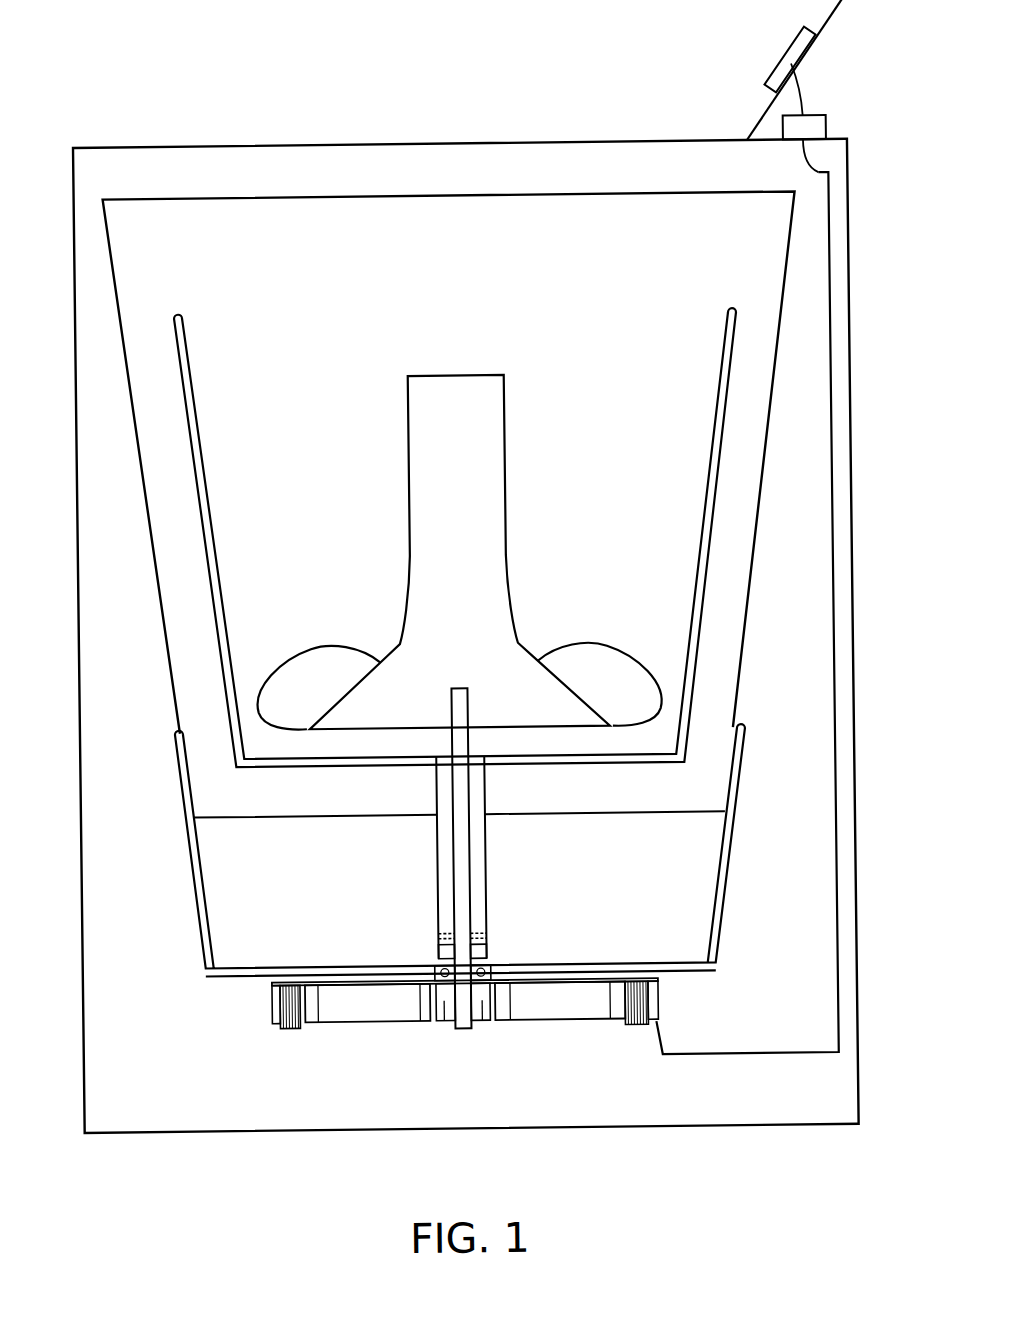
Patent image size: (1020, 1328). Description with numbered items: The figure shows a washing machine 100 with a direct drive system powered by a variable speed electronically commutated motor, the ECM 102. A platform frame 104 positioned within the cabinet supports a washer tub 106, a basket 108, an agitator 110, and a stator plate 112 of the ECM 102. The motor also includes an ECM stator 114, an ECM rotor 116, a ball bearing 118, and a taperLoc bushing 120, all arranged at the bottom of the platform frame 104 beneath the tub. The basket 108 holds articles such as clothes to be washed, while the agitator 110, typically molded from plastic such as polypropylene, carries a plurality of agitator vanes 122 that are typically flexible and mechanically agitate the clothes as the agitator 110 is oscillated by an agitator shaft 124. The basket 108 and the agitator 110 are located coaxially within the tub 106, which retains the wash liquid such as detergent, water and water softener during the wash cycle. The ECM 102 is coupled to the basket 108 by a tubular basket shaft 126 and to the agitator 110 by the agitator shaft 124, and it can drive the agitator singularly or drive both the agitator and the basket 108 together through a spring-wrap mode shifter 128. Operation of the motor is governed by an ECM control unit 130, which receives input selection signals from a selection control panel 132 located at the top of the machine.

The washing machine 100 is at (852, 532).
The electronically commutated motor (ECM) 102 is at (366, 1055).
The platform frame 104 is at (715, 906).
The washer tub 106 is at (736, 656).
The basket 108 is at (716, 404).
The agitator 110 is at (503, 499).
The stator plate 112 is at (648, 989).
The ECM stator 114 is at (640, 1028).
The ECM rotor 116 is at (538, 1008).
The ball bearing 118 is at (425, 970).
The taperLoc bushing 120 is at (475, 1026).
The agitator vanes 122 is at (648, 679).
The agitator shaft 124 is at (461, 838).
The tubular basket shaft 126 is at (429, 876).
The spring-wrap mode shifter 128 is at (477, 937).
The ECM control unit 130 is at (827, 137).
The selection control panel 132 is at (804, 67).